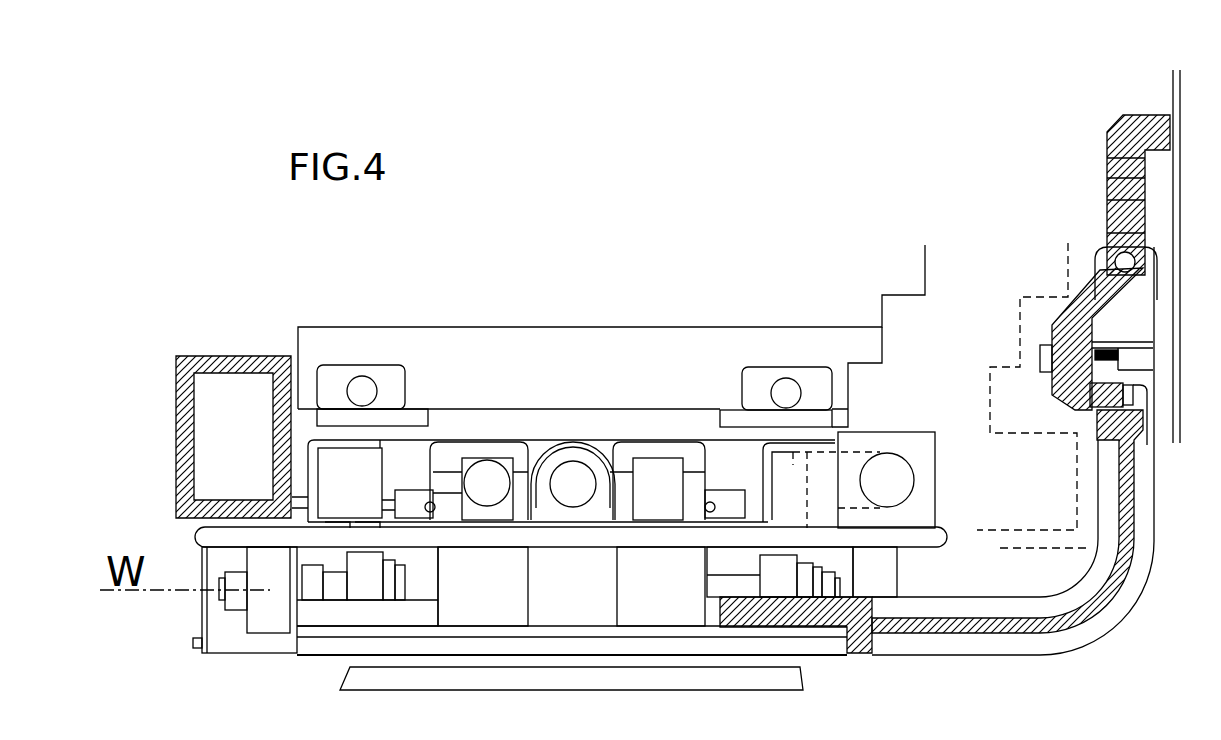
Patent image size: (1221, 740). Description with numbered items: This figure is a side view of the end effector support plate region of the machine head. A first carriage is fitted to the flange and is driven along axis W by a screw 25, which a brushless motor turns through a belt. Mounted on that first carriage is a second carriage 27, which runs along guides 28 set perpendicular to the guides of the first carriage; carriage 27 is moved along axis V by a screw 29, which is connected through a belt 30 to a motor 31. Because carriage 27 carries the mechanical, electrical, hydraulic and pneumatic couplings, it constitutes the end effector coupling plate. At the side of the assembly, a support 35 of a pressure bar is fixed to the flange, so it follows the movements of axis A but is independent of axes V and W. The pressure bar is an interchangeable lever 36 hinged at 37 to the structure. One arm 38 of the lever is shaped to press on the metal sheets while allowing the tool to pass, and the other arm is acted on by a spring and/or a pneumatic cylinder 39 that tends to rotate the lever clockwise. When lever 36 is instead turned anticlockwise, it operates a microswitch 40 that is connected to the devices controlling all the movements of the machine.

The screw 25 is at (405, 582).
The carriage 27 is at (587, 425).
The guides 28 is at (700, 515).
The screw 29 is at (574, 472).
The belt 30 is at (847, 450).
The motor 31 is at (887, 480).
The support of pressure bar 35 is at (1133, 447).
The lever 36 is at (1100, 200).
The hinge 37 is at (1120, 262).
The arm 38 is at (1107, 158).
The spring and/or pneumatic cylinder 39 is at (1108, 357).
The microswitch 40 is at (1093, 415).